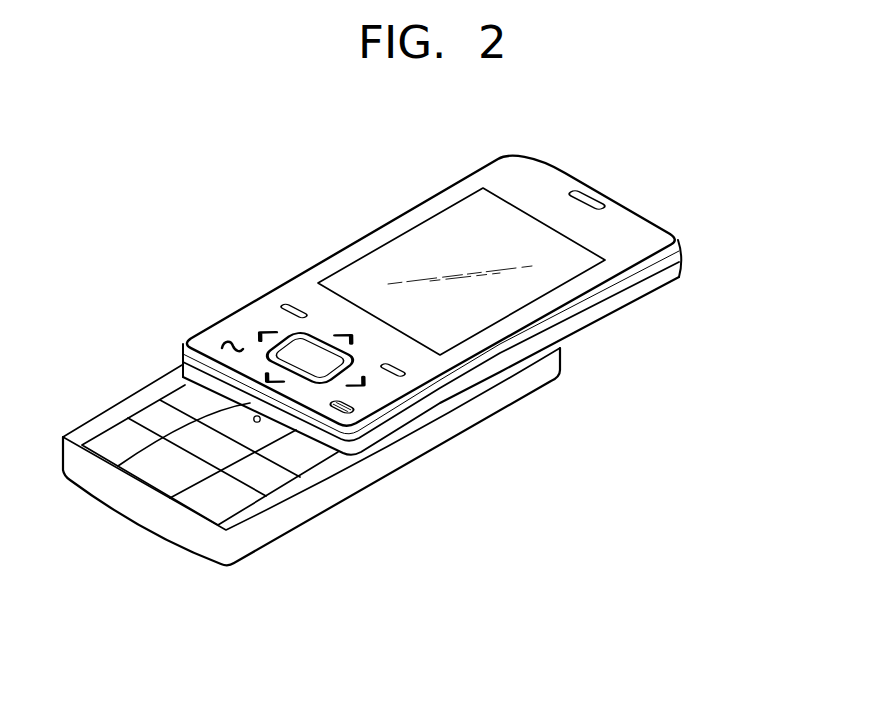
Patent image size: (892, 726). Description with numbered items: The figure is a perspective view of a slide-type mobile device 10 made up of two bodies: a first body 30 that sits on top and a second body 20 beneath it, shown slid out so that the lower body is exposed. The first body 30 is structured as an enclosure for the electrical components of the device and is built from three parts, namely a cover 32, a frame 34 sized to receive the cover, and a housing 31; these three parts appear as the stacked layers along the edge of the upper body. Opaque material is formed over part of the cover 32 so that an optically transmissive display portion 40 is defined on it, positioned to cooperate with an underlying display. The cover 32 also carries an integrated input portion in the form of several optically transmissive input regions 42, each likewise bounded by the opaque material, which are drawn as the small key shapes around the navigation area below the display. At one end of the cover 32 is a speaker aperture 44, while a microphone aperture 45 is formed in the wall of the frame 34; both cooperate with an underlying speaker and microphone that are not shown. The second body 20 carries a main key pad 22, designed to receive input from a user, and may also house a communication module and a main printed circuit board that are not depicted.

The slide-type mobile device 10 is at (596, 169).
The second body 20 is at (372, 500).
The main key pad 22 is at (148, 415).
The first body 30 is at (757, 208).
The housing 31 is at (652, 289).
The cover 32 is at (643, 233).
The frame 34 is at (661, 272).
The display portion 40 is at (418, 243).
The input regions 42 is at (349, 413).
The speaker aperture 44 is at (598, 197).
The microphone aperture 45 is at (186, 372).